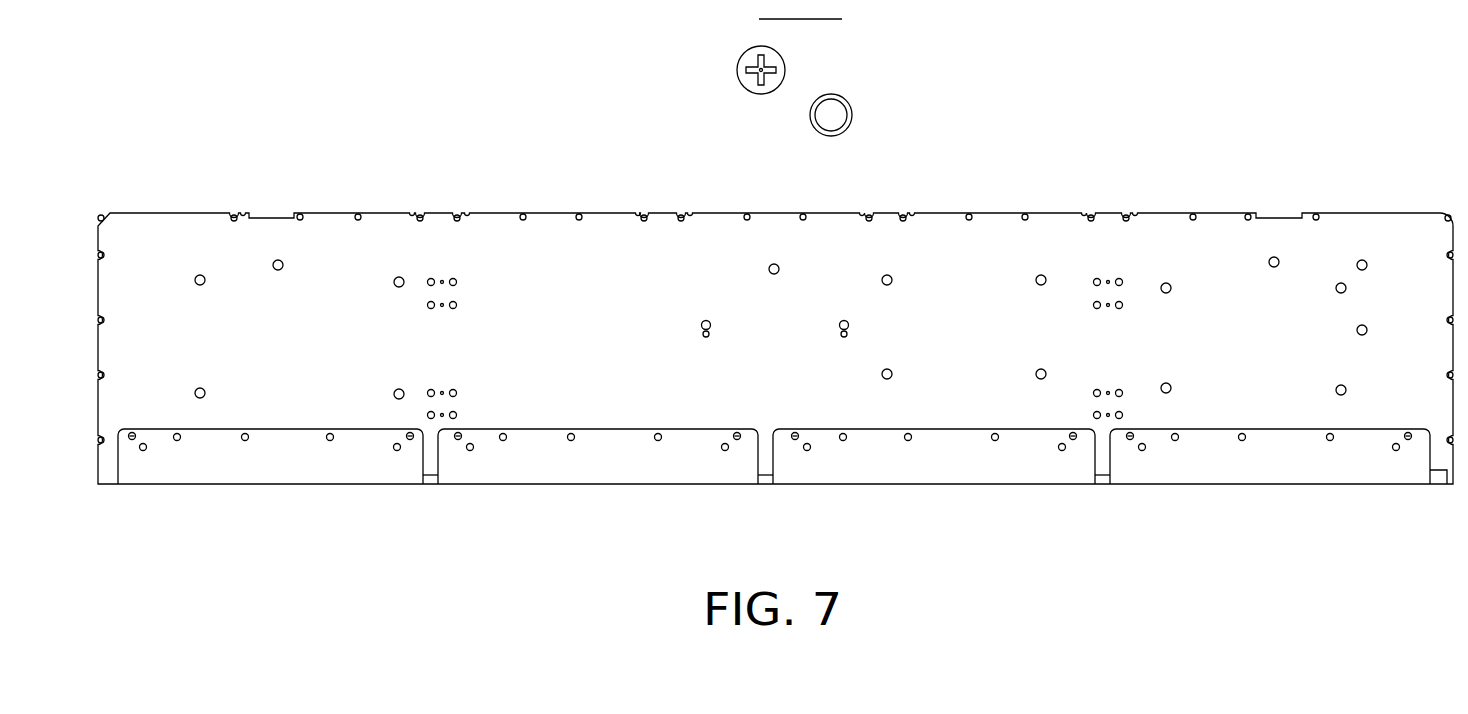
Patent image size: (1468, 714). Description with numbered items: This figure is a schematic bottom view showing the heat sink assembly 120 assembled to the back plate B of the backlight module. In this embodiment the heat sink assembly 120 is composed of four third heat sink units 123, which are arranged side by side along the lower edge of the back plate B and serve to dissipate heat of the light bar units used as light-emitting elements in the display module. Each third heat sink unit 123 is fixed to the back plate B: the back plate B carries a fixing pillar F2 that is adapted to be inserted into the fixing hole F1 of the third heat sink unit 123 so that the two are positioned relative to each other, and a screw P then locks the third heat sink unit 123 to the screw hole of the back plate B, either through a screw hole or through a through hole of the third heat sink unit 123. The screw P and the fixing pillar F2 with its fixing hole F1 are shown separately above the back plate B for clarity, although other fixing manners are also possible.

The heat sink assembly 120 is at (767, 361).
The third heat sink unit 123 is at (197, 473).
The back plate B is at (171, 230).
The screw P is at (740, 63).
The fixing hole F1 is at (846, 100).
The fixing pillar F2 is at (836, 117).